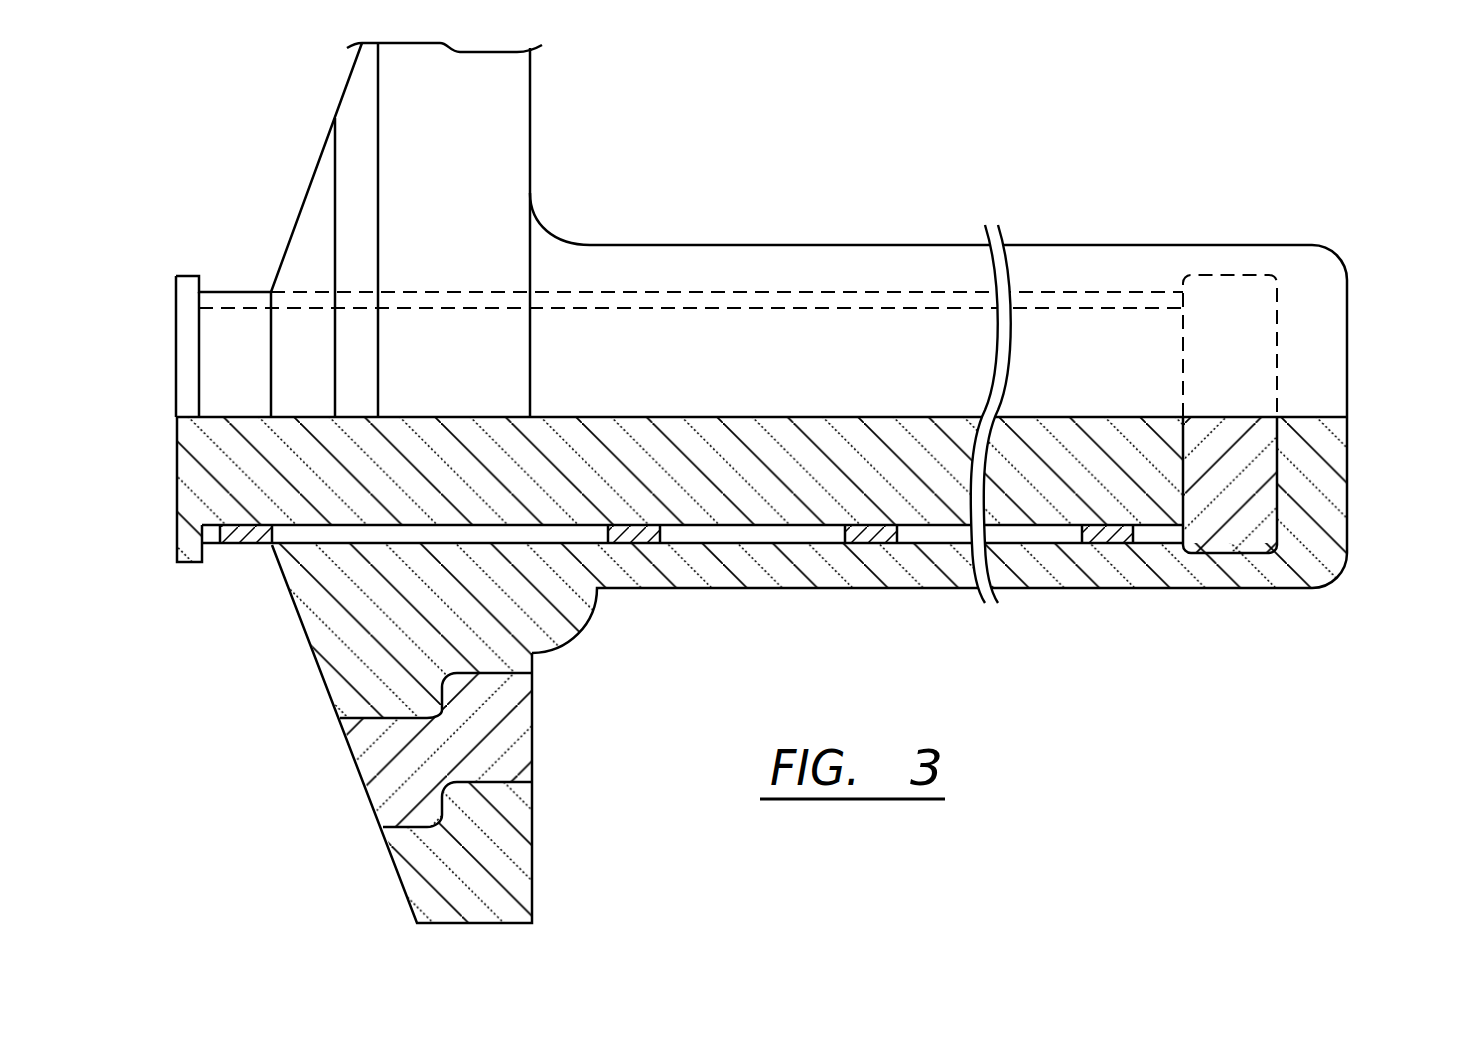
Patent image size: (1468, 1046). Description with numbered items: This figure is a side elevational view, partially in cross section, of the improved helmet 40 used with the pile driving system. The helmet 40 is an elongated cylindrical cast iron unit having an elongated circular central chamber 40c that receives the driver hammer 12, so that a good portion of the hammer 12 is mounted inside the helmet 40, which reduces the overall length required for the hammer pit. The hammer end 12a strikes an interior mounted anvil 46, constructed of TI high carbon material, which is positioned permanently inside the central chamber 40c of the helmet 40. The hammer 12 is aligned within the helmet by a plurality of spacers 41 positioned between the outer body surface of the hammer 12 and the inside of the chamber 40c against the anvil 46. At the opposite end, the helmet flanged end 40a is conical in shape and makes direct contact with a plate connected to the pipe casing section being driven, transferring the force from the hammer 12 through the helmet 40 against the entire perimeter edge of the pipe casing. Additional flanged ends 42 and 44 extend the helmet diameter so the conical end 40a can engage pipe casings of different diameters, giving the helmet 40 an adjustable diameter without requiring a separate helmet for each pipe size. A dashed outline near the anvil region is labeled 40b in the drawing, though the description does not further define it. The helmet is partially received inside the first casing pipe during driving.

The hammer 12 is at (786, 489).
The hammer end 12a is at (1182, 332).
The helmet 40 is at (862, 243).
The helmet flanged end 40a is at (550, 612).
The end wall portion 40b is at (1277, 355).
The central chamber 40c is at (700, 290).
The spacers 41 is at (240, 548).
The additional flanged end 42 is at (532, 733).
The additional flanged end 44 is at (532, 845).
The anvil 46 is at (1250, 467).